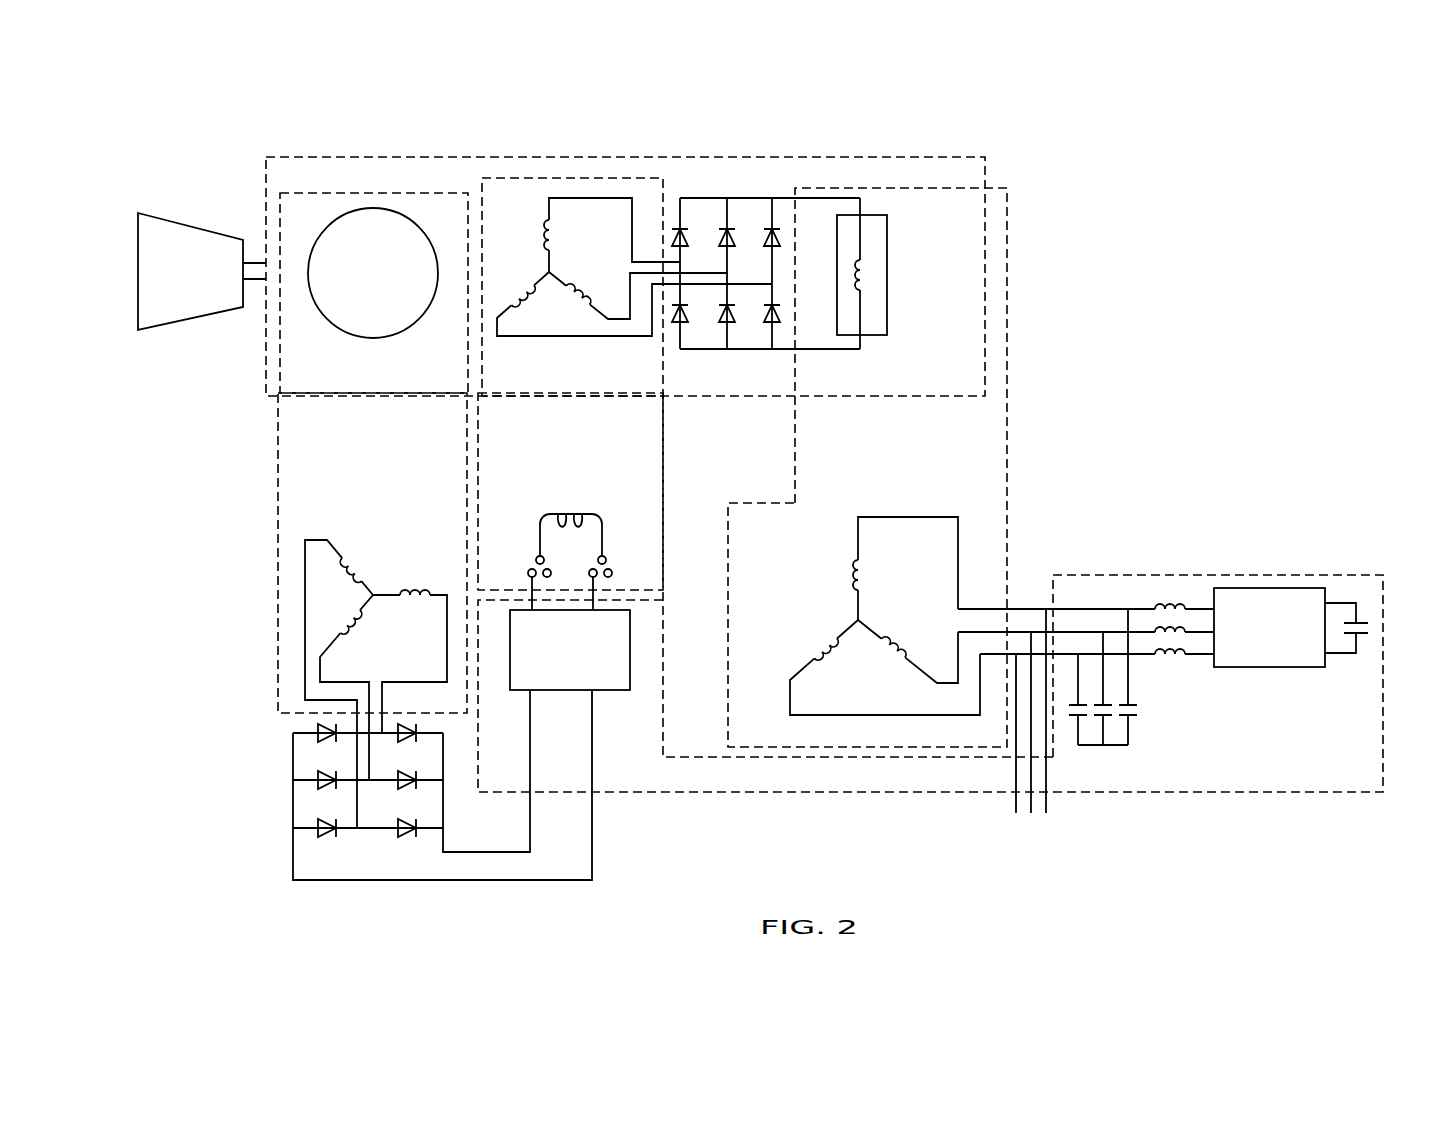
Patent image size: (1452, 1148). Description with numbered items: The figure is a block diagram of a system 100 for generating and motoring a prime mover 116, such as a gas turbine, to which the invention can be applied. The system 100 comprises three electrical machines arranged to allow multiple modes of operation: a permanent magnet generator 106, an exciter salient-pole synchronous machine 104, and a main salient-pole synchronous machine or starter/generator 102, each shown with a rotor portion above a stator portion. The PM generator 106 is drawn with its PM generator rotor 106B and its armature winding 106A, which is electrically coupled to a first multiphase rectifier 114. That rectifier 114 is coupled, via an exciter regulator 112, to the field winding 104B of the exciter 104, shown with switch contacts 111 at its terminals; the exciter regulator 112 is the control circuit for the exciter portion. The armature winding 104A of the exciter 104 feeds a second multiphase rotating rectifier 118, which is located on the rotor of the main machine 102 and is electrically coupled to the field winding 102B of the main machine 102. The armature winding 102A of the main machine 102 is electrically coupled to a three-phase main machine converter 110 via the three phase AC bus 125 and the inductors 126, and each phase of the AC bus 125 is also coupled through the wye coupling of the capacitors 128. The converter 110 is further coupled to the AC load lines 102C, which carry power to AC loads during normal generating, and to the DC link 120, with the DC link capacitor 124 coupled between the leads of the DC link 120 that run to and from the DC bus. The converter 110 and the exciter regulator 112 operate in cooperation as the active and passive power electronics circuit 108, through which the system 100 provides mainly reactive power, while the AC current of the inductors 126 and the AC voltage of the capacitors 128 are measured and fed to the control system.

The system 100 is at (1156, 262).
The main machine 102 is at (1014, 420).
The armature winding of the main machine 102A is at (835, 603).
The field winding of the main machine 102B is at (871, 297).
The AC load lines 102C is at (1004, 767).
The exciter 104 is at (672, 418).
The armature winding of the exciter 104A is at (529, 257).
The field winding of the exciter 104B is at (573, 505).
The permanent magnet generator 106 is at (262, 470).
The armature winding of the PM generator 106A is at (378, 586).
The PM generator rotor 106B is at (357, 285).
The active and passive power electronics circuit 108 is at (776, 805).
The main machine converter 110 is at (1276, 588).
The switch contacts 111 is at (524, 559).
The exciter regulator 112 is at (613, 696).
The multiphase rectifier 114 is at (276, 806).
The prime mover 116 is at (190, 224).
The multiphase rotating rectifier 118 is at (742, 190).
The DC link 120 is at (1343, 600).
The DC link capacitor 124 is at (1370, 630).
The three phase AC bus 125 is at (994, 608).
The inductors 126 is at (1174, 600).
The capacitors 128 is at (1140, 708).